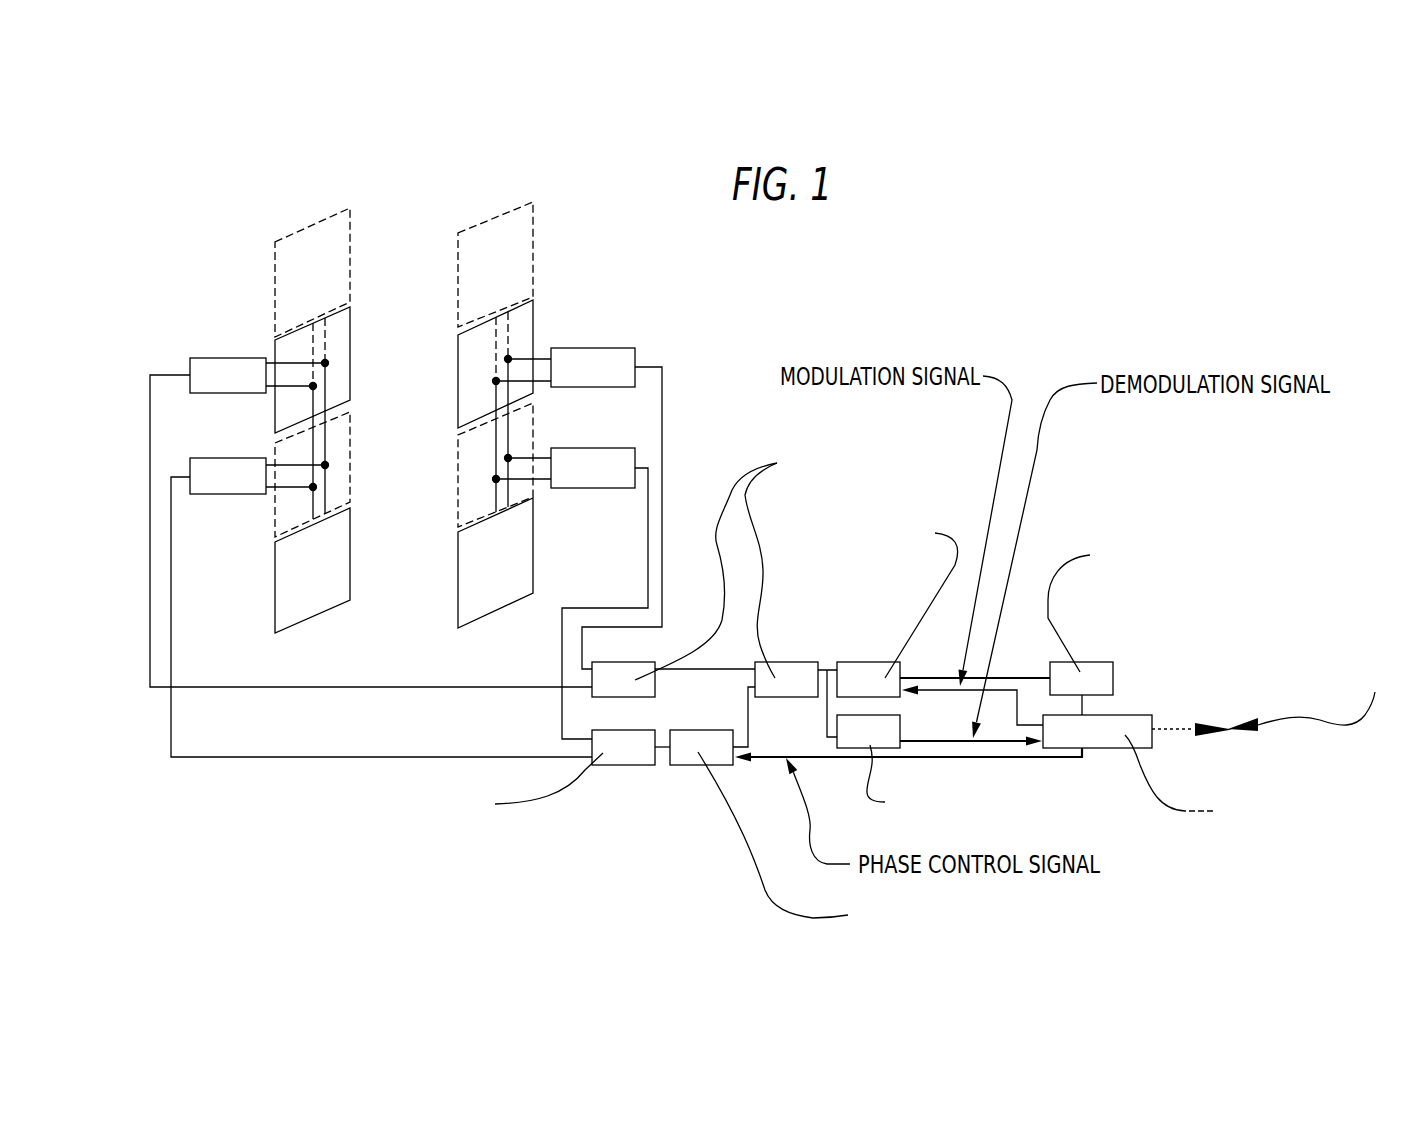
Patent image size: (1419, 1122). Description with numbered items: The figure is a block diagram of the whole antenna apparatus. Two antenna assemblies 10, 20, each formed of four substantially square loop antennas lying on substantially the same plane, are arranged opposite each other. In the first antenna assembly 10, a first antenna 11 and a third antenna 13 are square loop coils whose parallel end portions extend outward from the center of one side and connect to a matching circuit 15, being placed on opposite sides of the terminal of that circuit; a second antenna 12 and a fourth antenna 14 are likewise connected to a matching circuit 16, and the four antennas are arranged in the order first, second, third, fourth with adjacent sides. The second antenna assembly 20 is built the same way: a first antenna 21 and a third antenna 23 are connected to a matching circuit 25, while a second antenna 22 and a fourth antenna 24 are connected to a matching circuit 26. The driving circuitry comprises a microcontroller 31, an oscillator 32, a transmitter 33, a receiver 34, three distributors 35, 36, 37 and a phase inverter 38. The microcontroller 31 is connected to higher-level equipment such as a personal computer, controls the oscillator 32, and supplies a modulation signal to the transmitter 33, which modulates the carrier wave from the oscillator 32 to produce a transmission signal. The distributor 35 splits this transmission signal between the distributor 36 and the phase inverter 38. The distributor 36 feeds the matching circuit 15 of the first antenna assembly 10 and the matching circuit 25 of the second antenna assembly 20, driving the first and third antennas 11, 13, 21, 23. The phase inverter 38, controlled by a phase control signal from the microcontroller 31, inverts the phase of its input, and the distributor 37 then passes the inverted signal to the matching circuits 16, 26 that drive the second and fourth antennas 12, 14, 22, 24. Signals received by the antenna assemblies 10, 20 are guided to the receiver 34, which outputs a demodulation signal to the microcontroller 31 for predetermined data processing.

The first antenna assembly 10 is at (240, 272).
The first antenna 11 is at (351, 222).
The second antenna 12 is at (351, 327).
The third antenna 13 is at (351, 428).
The fourth antenna 14 is at (351, 550).
The matching circuit 15 is at (216, 358).
The matching circuit 16 is at (217, 458).
The second antenna assembly 20 is at (567, 271).
The first antenna 21 is at (534, 212).
The second antenna 22 is at (534, 313).
The third antenna 23 is at (534, 420).
The fourth antenna 24 is at (534, 545).
The matching circuit 25 is at (617, 348).
The matching circuit 26 is at (617, 448).
The microcontroller 31 is at (1108, 748).
The oscillator 32 is at (1085, 662).
The transmitter 33 is at (853, 662).
The receiver 34 is at (837, 745).
The distributor 35 is at (780, 662).
The distributor 36 is at (610, 662).
The distributor 37 is at (605, 765).
The phase inverter 38 is at (700, 765).